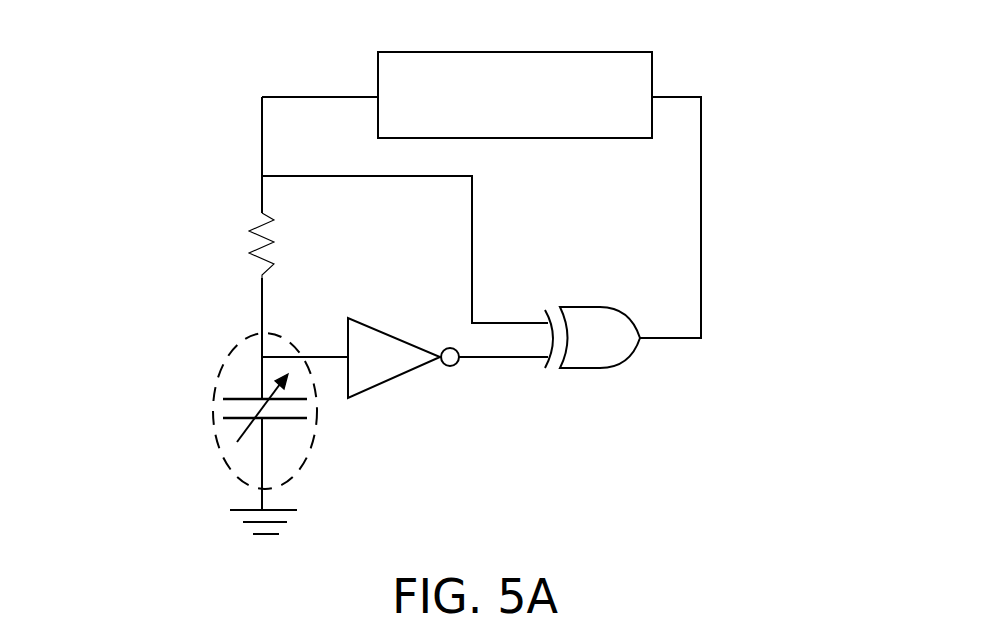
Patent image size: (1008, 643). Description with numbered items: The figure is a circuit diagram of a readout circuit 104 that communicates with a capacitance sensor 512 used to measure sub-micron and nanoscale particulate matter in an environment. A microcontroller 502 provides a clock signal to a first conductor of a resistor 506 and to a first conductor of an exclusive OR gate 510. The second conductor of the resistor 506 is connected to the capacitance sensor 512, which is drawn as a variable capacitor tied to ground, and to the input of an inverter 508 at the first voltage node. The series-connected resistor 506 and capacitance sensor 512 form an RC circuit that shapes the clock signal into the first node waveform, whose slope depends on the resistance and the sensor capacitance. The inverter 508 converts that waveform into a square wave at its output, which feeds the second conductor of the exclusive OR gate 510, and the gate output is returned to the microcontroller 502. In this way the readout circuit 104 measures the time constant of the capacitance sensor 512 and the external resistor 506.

The readout circuit 104 is at (152, 108).
The microcontroller 502 is at (645, 134).
The resistor 506 is at (250, 227).
The inverter 508 is at (348, 317).
The exclusive OR gate 510 is at (548, 306).
The capacitance sensor 512 is at (225, 360).